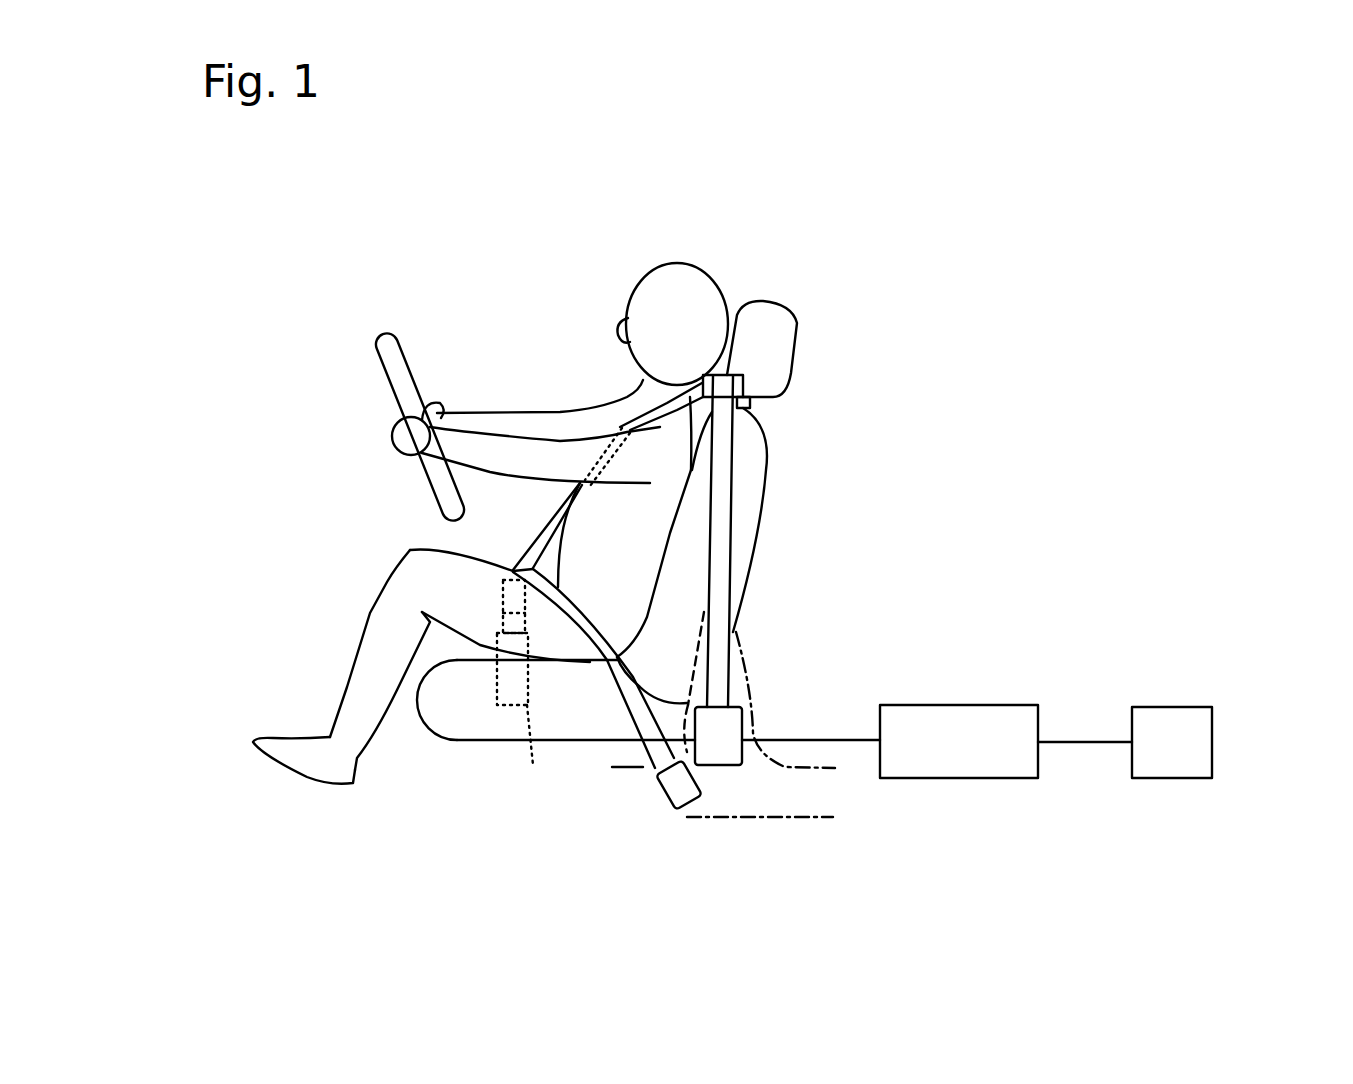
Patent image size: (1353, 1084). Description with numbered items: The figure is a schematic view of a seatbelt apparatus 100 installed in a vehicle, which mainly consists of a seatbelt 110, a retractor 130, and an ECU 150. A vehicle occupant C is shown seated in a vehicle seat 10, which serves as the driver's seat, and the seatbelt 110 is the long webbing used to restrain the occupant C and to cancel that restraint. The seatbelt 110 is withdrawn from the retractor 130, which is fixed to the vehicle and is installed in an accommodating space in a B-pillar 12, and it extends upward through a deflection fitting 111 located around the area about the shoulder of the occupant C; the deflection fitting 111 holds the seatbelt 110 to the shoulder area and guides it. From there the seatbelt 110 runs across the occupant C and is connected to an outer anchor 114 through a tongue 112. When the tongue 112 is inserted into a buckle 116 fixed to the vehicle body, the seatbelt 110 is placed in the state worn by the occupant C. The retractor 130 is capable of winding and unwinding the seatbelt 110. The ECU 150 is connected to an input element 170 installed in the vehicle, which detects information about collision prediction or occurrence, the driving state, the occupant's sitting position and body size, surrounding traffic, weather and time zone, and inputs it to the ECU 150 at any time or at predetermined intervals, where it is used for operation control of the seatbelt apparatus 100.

The seatbelt apparatus 100 is at (997, 440).
The vehicle seat 10 is at (762, 468).
The B-pillar 12 is at (753, 673).
The seatbelt 110 is at (733, 606).
The deflection fitting 111 is at (770, 310).
The tongue 112 is at (503, 617).
The outer anchor 114 is at (655, 817).
The buckle 116 is at (534, 757).
The retractor 130 is at (727, 770).
The ECU 150 is at (983, 702).
The input element 170 is at (1157, 700).
The vehicle occupant C is at (588, 405).